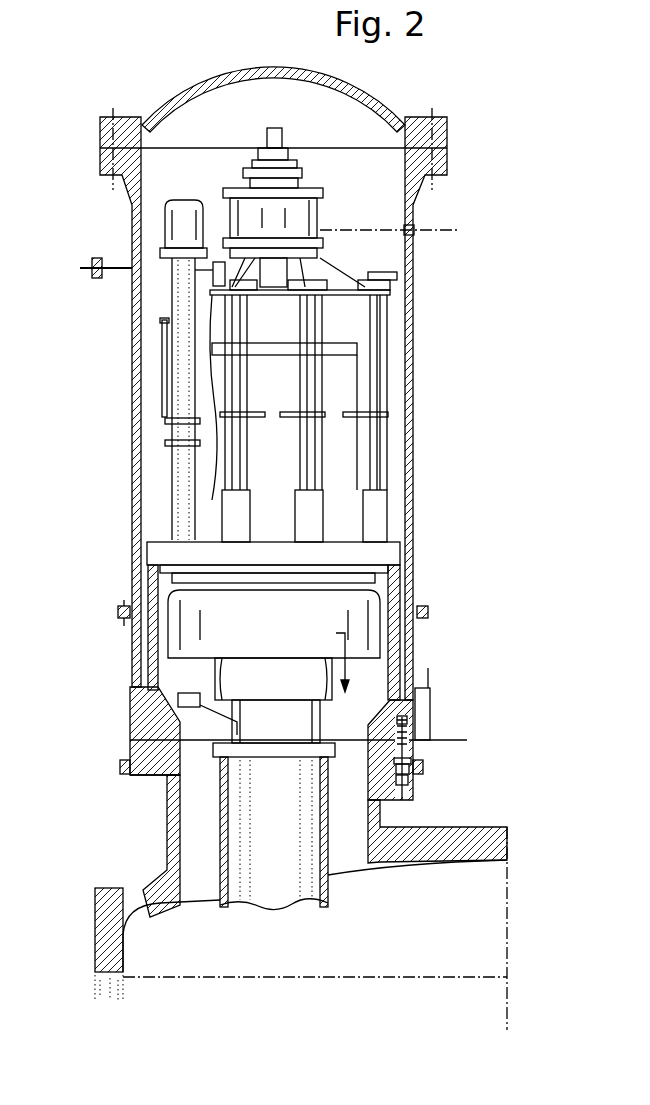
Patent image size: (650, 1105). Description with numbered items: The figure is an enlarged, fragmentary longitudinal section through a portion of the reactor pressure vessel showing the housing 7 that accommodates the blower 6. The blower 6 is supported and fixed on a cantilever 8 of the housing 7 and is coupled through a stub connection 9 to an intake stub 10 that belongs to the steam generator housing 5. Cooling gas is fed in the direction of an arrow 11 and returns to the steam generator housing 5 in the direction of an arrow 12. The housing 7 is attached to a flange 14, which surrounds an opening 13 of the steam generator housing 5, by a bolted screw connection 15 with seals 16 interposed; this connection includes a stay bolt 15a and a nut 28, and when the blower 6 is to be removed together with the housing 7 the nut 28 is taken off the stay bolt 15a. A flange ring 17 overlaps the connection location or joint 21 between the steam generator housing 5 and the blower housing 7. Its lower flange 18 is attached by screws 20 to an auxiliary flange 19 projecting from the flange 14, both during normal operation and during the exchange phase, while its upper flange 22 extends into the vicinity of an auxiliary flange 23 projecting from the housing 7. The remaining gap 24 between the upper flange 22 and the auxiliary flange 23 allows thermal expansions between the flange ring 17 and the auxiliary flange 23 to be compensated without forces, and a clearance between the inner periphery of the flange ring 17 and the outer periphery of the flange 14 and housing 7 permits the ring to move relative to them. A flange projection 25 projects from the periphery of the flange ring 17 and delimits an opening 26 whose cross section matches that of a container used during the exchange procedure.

The steam generator housing 5 is at (108, 910).
The blower 6 is at (390, 507).
The housing 7 is at (411, 401).
The cantilever 8 is at (406, 592).
The stub connection 9 is at (165, 820).
The intake stub 10 is at (322, 908).
The arrow 11 is at (280, 905).
The arrow 12 is at (427, 612).
The opening 13 is at (145, 797).
The flange 14 is at (120, 772).
The bolted screw connection 15 is at (420, 787).
The stay bolt 15a is at (416, 748).
The seals 16 is at (130, 722).
The flange ring 17 is at (417, 637).
The lower flange 18 is at (426, 762).
The auxiliary flange 19 is at (428, 772).
The screws 20 is at (421, 747).
The joint 21 is at (130, 733).
The upper flange 22 is at (120, 618).
The auxiliary flange 23 is at (120, 606).
The gap 24 is at (95, 617).
The flange projection 25 is at (428, 668).
The opening 26 is at (421, 704).
The nut 28 is at (490, 866).